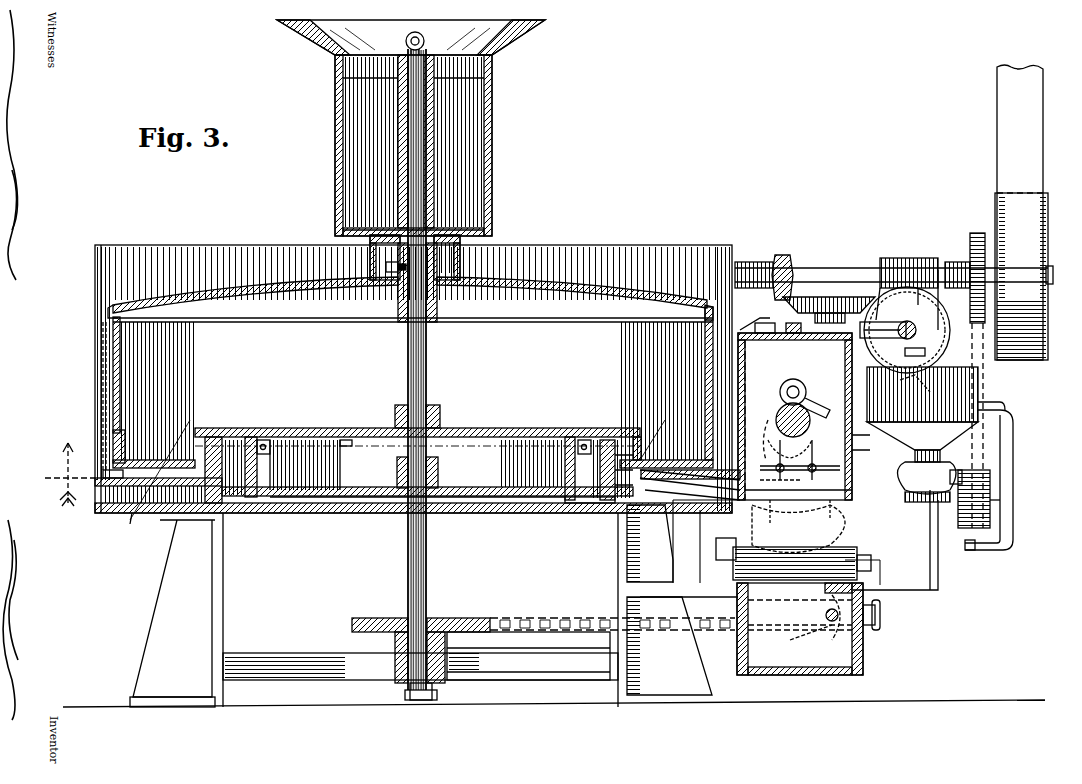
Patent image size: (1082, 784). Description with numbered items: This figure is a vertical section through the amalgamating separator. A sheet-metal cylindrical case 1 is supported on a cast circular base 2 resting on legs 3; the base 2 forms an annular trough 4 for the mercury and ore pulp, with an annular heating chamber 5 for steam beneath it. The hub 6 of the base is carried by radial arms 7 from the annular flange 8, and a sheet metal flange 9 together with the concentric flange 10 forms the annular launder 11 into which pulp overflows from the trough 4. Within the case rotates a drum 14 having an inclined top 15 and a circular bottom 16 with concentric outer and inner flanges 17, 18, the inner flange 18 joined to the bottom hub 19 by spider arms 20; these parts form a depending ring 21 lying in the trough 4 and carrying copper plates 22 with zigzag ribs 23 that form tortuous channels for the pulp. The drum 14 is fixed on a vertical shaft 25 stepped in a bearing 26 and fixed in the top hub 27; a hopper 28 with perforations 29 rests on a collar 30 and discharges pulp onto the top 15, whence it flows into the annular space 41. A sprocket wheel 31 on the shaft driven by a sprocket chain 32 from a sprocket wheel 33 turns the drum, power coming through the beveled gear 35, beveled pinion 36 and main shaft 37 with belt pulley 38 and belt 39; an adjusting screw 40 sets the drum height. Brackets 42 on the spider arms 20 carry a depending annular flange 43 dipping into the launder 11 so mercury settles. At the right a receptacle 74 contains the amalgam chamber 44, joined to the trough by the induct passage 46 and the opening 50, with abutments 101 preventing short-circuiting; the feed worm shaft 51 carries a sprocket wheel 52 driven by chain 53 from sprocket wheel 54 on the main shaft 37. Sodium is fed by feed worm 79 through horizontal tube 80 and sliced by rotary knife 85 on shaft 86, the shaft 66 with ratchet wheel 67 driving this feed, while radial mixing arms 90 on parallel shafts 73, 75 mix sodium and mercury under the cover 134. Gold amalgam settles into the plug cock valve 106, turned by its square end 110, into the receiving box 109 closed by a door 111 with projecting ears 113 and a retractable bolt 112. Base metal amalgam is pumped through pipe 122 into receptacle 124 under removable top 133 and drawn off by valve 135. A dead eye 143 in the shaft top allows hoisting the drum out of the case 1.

The cylindrical case 1 is at (222, 262).
The circular base 2 is at (96, 490).
The legs 3 is at (160, 604).
The annular trough 4 is at (103, 474).
The annular heating chamber 5 is at (100, 513).
The hub 6 is at (438, 472).
The radial arms 7 is at (370, 497).
The annular flange 8 is at (452, 500).
The sheet metal flange 9 is at (530, 440).
The concentric flange 10 is at (248, 437).
The annular launder 11 is at (600, 505).
The drum 14 is at (130, 378).
The top 15 is at (612, 296).
The circular bottom 16 is at (406, 457).
The outer flange 17 is at (113, 445).
The inner flange 18 is at (200, 440).
The bottom hub 19 is at (400, 405).
The spider arms 20 is at (318, 428).
The depending ring 21 is at (615, 440).
The copper plates 22 is at (160, 495).
The zigzag ribs 23 is at (688, 470).
The vertical shaft 25 is at (427, 352).
The bearing 26 is at (460, 650).
The hub 27 is at (398, 305).
The hopper 28 is at (492, 130).
The perforations 29 is at (350, 236).
The collar 30 is at (370, 266).
The sprocket wheel 31 is at (370, 618).
The sprocket chain 32 is at (535, 618).
The sprocket wheel 33 is at (800, 629).
The beveled gear 35 is at (810, 297).
The beveled pinion 36 is at (783, 255).
The main shaft 37 is at (856, 264).
The belt pulley 38 is at (997, 193).
The belt 39 is at (997, 108).
The adjusting screw 40 is at (405, 692).
The annular space 41 is at (100, 327).
The brackets 42 is at (270, 440).
The depending annular flange 43 is at (570, 503).
The amalgam chamber 44 is at (795, 411).
The induct passage 46 is at (711, 548).
The opening 50 is at (819, 515).
The shaft 51 is at (880, 500).
The sprocket wheel 52 is at (992, 512).
The chain 53 is at (985, 365).
The sprocket wheel 54 is at (975, 233).
The shaft 66 is at (905, 330).
The ratchet wheel 67 is at (908, 260).
The shaft 73 is at (776, 462).
The receptacle 74 is at (867, 435).
The shaft 75 is at (905, 462).
The feed worm 79 is at (786, 410).
The horizontal tube 80 is at (810, 424).
The rotary knife 85 is at (826, 408).
The shaft 86 is at (795, 390).
The radial mixing arms 90 is at (785, 515).
The abutments 101 is at (720, 500).
The plug cock valve 106 is at (798, 529).
The receiving box 109 is at (689, 626).
The square end 110 is at (871, 573).
The door 111 is at (875, 625).
The retractable bolt 112 is at (826, 614).
The projecting ears 113 is at (832, 622).
The pipe 122 is at (1013, 455).
The receptacle 124 is at (985, 392).
The removable top 133 is at (914, 389).
The cover 134 is at (764, 420).
The valve 135 is at (958, 498).
The dead eye 143 is at (425, 42).